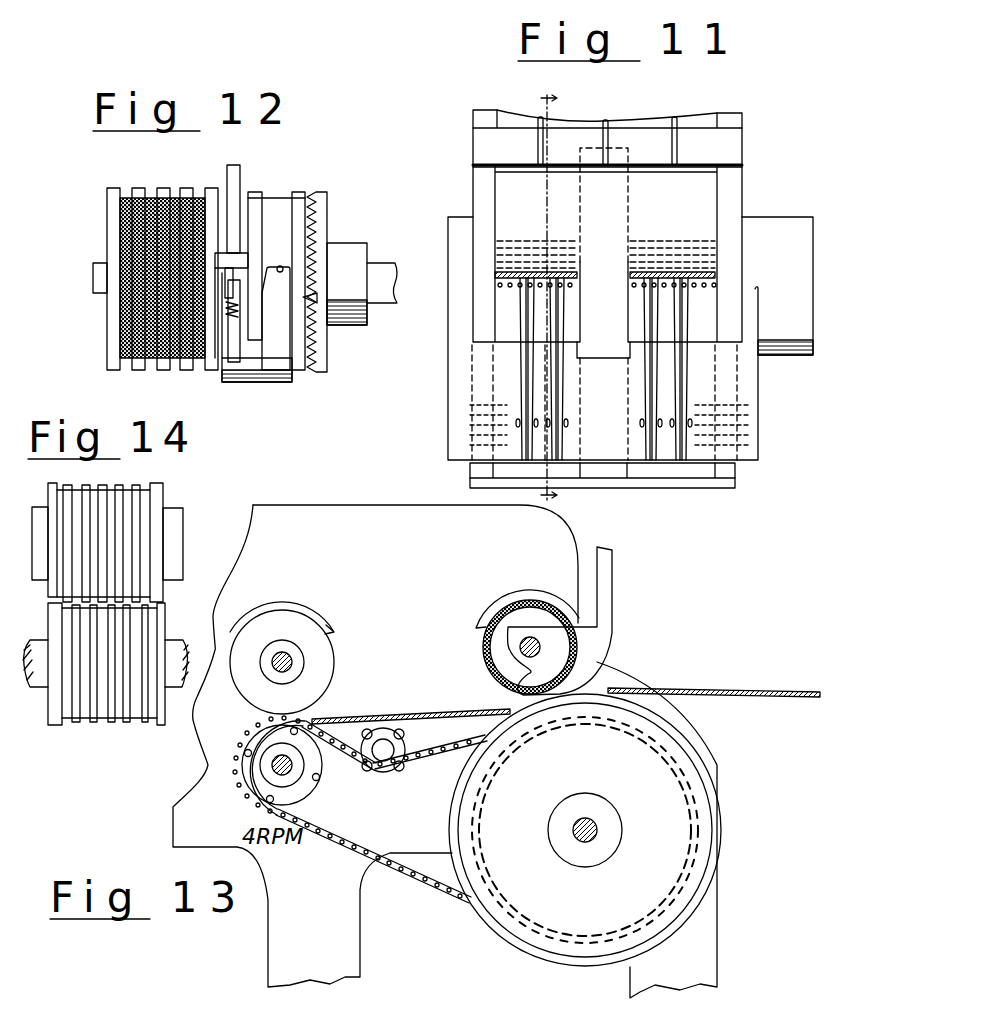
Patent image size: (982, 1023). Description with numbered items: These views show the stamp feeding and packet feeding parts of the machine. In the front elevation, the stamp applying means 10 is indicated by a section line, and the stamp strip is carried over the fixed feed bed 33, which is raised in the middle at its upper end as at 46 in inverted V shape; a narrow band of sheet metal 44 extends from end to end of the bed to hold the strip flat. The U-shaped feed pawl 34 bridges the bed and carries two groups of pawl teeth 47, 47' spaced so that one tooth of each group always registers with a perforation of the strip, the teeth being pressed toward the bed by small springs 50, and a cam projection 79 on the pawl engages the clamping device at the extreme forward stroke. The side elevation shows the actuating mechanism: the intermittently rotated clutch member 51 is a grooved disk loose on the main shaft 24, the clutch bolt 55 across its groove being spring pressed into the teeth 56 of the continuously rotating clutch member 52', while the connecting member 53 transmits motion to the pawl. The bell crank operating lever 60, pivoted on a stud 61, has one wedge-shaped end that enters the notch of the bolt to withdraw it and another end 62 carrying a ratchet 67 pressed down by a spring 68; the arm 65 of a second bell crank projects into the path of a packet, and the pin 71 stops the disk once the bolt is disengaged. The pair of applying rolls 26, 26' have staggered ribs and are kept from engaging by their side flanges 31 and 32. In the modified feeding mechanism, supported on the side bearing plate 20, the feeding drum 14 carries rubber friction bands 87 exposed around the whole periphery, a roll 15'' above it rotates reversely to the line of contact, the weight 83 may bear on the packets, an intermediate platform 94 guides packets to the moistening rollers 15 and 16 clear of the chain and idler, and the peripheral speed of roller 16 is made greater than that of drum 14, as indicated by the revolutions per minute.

In FIG. 12, the moistening roller 16 is at (127, 233).
In FIG. 13, the moistening roller 16 is at (318, 798).
In FIG. 12, the main shaft 24 is at (103, 282).
In FIG. 13, the main shaft 24 is at (277, 770).
In FIG. 12, the arm of second bell crank lever 65 is at (240, 175).
In FIG. 12, the end of operating lever 62 is at (228, 340).
In FIG. 12, the stud 61 is at (224, 372).
In FIG. 12, the ratchet 67 is at (225, 288).
In FIG. 12, the spring 68 is at (226, 310).
In FIG. 12, the intermittently rotated clutch member 51 is at (276, 281).
In FIG. 12, the connecting member 53 is at (279, 318).
In FIG. 12, the pin 71 is at (282, 265).
In FIG. 12, the operating lever 60 is at (280, 362).
In FIG. 12, the continuously rotating clutch member 52' is at (341, 281).
In FIG. 12, the clutch bolt 55 is at (318, 296).
In FIG. 12, the teeth 56 is at (310, 297).
In FIG. 11, the raised portion of feed bed 46 is at (627, 120).
In FIG. 11, the feed bed 33 is at (733, 176).
In FIG. 11, the feed pawl 34 is at (752, 455).
In FIG. 11, the band 44 is at (618, 478).
In FIG. 11, the cam projection 79 is at (603, 304).
In FIG. 11, the stamp applying means 10 is at (555, 294).
In FIG. 11, the pawl teeth 47 is at (522, 369).
In FIG. 11, the pawl teeth 47' is at (687, 369).
In FIG. 11, the springs 50 is at (642, 421).
In FIG. 14, the applying roll 26' is at (138, 541).
In FIG. 14, the side flange 32 is at (162, 595).
In FIG. 14, the applying roll 26 is at (106, 682).
In FIG. 14, the side flange 31 is at (171, 678).
In FIG. 13, the side bearing plate 20 is at (375, 746).
In FIG. 13, the rubber friction bands 87 is at (708, 774).
In FIG. 13, the moistening roller 15 is at (311, 658).
In FIG. 13, the intermediate platform 94 is at (402, 712).
In FIG. 13, the roll 15'' is at (516, 642).
In FIG. 13, the weight 83 is at (560, 621).
In FIG. 13, the feeding drum 14 is at (700, 829).